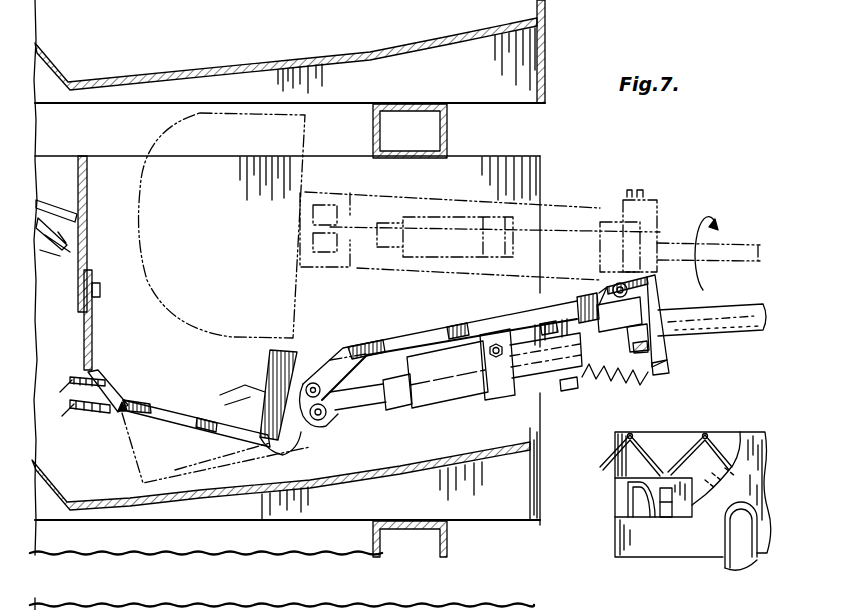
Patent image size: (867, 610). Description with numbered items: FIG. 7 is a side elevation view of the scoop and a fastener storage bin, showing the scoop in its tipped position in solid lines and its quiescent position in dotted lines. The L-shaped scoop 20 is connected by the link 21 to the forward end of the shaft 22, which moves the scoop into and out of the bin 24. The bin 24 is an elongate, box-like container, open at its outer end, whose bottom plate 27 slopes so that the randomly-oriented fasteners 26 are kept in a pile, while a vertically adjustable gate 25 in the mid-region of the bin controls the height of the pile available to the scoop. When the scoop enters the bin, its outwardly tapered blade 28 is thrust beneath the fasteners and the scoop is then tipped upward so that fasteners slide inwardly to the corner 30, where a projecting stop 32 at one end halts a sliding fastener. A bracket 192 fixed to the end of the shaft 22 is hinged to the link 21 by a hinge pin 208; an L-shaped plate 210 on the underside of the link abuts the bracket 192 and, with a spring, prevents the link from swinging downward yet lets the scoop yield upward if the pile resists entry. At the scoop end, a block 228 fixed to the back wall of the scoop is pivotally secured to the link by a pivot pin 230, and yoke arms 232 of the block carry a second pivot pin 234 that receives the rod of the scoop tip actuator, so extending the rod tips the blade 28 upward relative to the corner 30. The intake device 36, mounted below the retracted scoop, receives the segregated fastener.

The scoop 20 is at (133, 223).
The link 21 is at (397, 343).
The shaft 22 is at (705, 328).
The bin 24 is at (543, 464).
The gate 25 is at (97, 323).
The fasteners 26 is at (220, 390).
The bottom plate 27 is at (443, 466).
The blade 28 is at (150, 398).
The corner 30 is at (233, 438).
The stop 32 is at (270, 443).
The intake device 36 is at (673, 422).
The bracket 192 is at (660, 298).
The hinge pin 208 is at (624, 281).
The plate 210 is at (557, 317).
The block 228 is at (302, 378).
The pivot pin 230 is at (340, 350).
The yoke arms 232 is at (323, 422).
The second pivot pin 234 is at (352, 388).